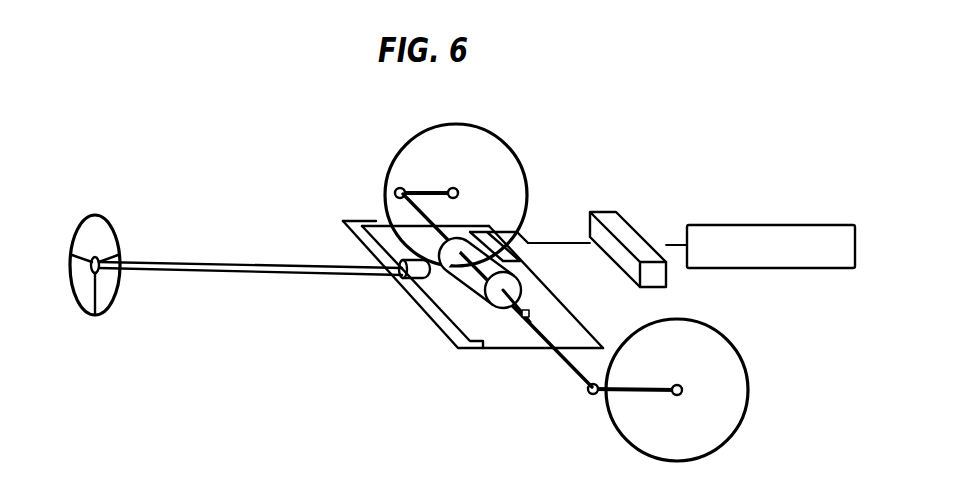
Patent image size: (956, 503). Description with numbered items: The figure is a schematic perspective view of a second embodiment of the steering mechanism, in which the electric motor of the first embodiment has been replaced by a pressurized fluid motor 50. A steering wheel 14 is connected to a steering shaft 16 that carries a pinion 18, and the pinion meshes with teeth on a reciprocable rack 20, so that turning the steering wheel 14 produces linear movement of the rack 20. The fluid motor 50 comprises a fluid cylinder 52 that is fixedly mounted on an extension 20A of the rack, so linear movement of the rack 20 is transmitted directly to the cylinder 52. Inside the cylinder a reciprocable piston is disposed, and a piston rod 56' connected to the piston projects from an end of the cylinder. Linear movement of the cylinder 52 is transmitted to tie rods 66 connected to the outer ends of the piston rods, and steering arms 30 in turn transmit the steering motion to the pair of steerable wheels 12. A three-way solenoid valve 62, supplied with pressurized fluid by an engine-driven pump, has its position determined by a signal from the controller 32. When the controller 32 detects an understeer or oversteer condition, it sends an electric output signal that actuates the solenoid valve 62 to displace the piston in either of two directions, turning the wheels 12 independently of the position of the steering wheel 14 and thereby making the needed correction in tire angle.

The steerable wheels 12 is at (523, 163).
The steering wheel 14 is at (117, 238).
The steering shaft 16 is at (208, 263).
The pinion 18 is at (416, 274).
The rack 20 is at (448, 319).
The rack extension 20A is at (527, 268).
The steering arms 30 is at (400, 190).
The controller 32 is at (820, 225).
The pressurized fluid motor 50 is at (527, 301).
The fluid cylinder 52 is at (488, 233).
The piston rod 56' is at (487, 350).
The three-way solenoid valve 62 is at (619, 224).
The tie rods 66 is at (412, 210).